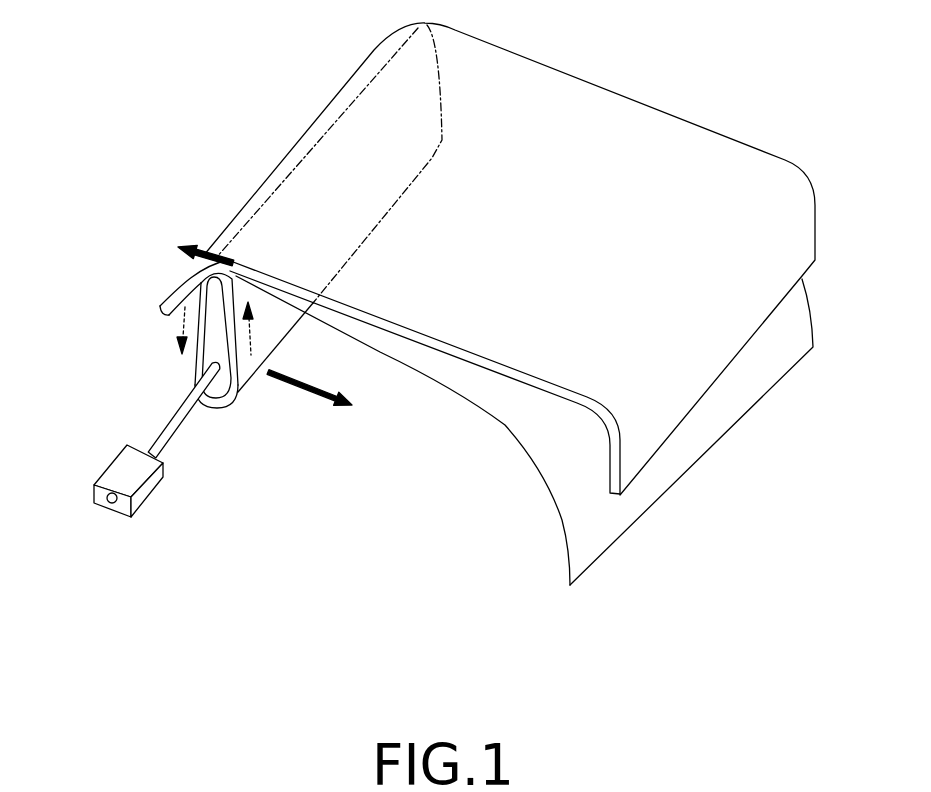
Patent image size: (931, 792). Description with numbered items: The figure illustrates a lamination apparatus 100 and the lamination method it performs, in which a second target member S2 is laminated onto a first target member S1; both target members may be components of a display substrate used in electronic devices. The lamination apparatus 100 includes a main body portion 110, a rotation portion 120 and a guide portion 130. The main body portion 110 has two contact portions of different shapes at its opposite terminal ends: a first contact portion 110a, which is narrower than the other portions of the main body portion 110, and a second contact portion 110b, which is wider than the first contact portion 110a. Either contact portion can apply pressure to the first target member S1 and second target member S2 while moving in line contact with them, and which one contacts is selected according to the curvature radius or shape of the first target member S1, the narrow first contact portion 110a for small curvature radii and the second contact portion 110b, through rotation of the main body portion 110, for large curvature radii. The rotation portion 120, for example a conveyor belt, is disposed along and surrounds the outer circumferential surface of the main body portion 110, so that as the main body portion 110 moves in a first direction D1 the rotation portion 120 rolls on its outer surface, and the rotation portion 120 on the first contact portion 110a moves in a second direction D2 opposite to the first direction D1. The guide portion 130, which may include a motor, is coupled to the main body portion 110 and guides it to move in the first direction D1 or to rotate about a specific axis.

The lamination apparatus 100 is at (324, 381).
The main body portion 110 is at (209, 323).
The first contact portion 110a is at (195, 268).
The second contact portion 110b is at (223, 408).
The rotation portion 120 is at (197, 364).
The guide portion 130 is at (158, 432).
The first target member S1 is at (790, 203).
The second target member S2 is at (795, 318).
The first direction D1 is at (297, 390).
The second direction D2 is at (198, 256).